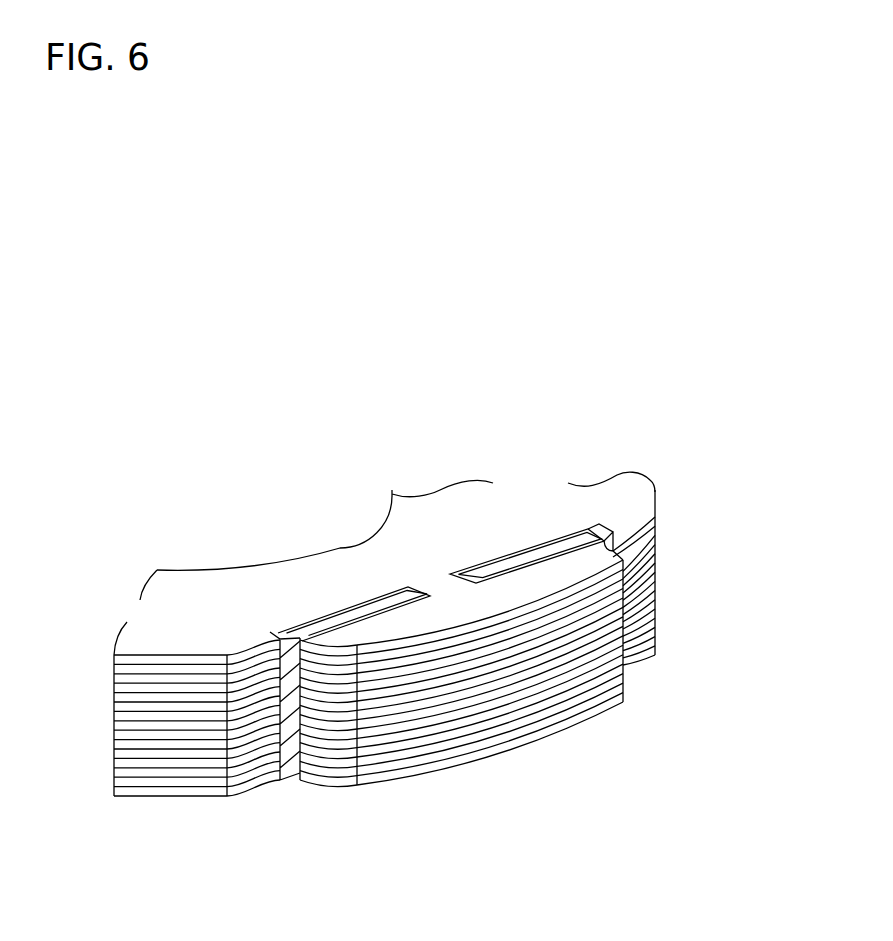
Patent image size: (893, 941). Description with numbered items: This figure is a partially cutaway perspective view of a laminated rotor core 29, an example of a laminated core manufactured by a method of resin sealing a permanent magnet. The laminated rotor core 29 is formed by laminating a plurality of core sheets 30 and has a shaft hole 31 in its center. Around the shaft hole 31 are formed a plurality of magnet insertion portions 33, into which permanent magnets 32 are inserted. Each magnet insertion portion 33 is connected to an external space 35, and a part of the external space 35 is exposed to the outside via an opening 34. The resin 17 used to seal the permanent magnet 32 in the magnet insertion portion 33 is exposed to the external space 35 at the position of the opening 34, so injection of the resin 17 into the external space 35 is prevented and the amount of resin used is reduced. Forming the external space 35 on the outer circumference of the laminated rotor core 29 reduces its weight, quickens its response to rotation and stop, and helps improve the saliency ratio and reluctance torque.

The laminated rotor core 29 is at (543, 381).
The core sheets 30 is at (657, 532).
The shaft hole 31 is at (183, 570).
The permanent magnet 32 is at (507, 560).
The magnet insertion portion 33 is at (390, 622).
The opening 34 is at (298, 790).
The external space 35 is at (645, 672).
The resin 17 is at (276, 628).